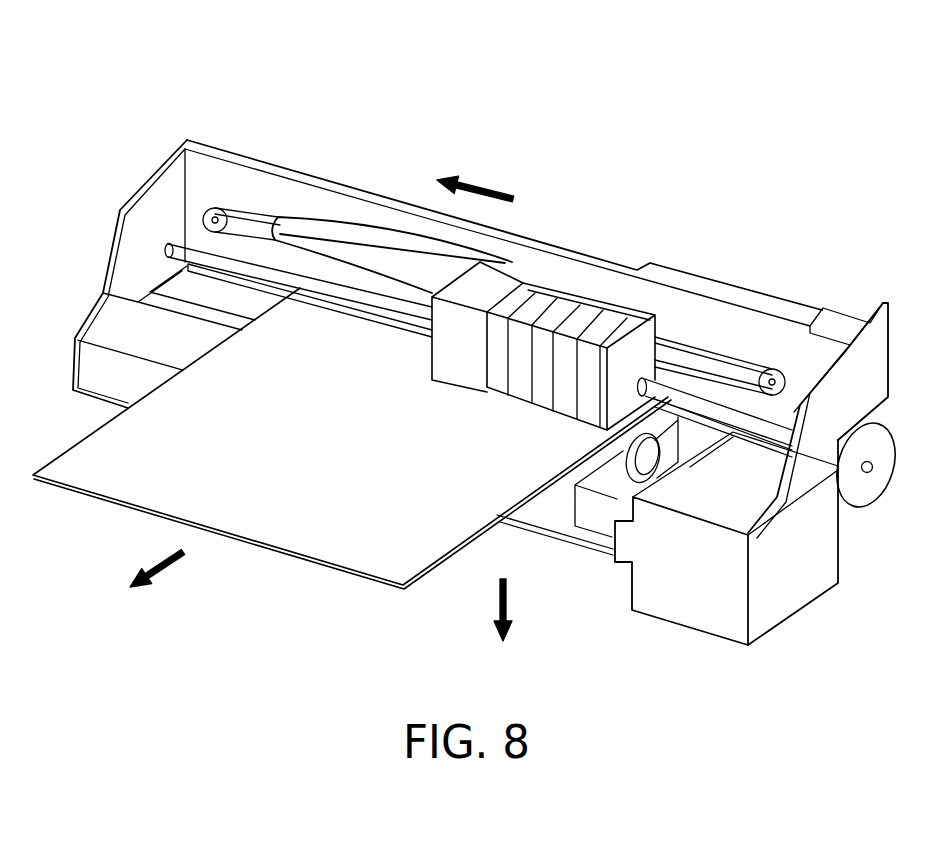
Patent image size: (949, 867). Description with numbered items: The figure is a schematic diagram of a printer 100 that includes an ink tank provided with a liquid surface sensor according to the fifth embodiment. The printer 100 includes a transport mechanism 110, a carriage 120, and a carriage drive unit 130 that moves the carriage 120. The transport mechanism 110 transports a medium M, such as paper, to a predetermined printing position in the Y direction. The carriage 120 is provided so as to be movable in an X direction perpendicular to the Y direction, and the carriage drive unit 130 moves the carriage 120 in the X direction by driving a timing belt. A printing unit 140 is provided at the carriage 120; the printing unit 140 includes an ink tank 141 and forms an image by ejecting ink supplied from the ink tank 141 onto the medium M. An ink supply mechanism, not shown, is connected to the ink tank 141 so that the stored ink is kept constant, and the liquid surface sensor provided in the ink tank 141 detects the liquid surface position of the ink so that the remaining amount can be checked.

The printer 100 is at (712, 118).
The transport mechanism 110 is at (670, 462).
The carriage 120 is at (517, 283).
The carriage drive unit 130 is at (783, 350).
The printing unit 140 is at (472, 360).
The ink tank 141 is at (622, 316).
The medium M is at (158, 482).